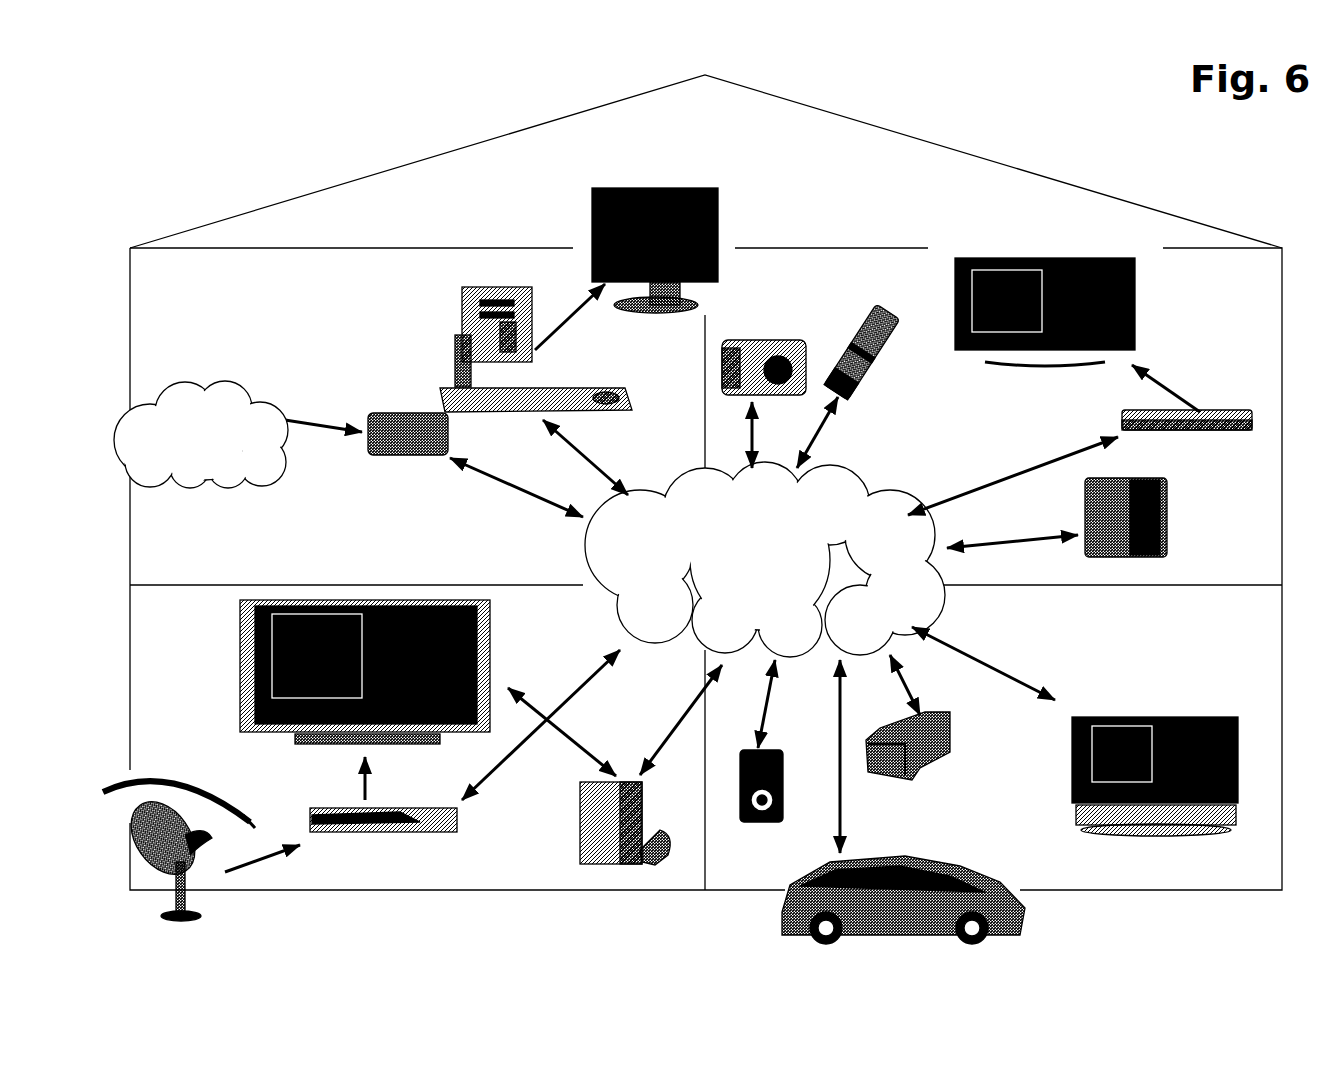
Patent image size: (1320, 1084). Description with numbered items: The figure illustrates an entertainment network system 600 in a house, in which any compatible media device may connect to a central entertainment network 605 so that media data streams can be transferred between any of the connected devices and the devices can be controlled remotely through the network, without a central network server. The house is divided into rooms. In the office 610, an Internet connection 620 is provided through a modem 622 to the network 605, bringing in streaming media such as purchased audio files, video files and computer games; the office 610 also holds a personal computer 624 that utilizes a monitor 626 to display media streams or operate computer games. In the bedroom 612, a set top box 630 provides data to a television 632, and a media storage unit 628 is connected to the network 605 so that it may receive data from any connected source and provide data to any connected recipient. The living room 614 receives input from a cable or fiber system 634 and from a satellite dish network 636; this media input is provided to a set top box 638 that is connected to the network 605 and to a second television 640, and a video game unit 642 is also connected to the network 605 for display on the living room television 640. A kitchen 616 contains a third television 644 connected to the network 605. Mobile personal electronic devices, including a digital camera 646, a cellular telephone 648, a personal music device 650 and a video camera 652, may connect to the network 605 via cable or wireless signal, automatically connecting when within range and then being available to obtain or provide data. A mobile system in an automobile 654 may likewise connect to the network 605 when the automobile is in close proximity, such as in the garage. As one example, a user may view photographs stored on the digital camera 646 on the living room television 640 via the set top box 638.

The entertainment network system 600 is at (328, 146).
The entertainment network 605 is at (765, 559).
The office 610 is at (529, 509).
The bedroom 612 is at (1112, 416).
The living room 614 is at (457, 741).
The kitchen 616 is at (1151, 737).
The Internet connection 620 is at (207, 383).
The modem 622 is at (405, 457).
The personal computer 624 is at (440, 348).
The monitor 626 is at (690, 184).
The media storage unit 628 is at (1170, 503).
The set top box 630 is at (1178, 437).
The television 632 is at (1078, 215).
The cable or fiber system 634 is at (196, 772).
The satellite dish network 636 is at (172, 890).
The set top box 638 is at (370, 835).
The second television 640 is at (385, 600).
The video game unit 642 is at (620, 870).
The third television 644 is at (1130, 715).
The digital camera 646 is at (754, 338).
The cellular telephone 648 is at (893, 313).
The personal music device 650 is at (775, 822).
The video camera 652 is at (925, 765).
The automobile 654 is at (905, 863).